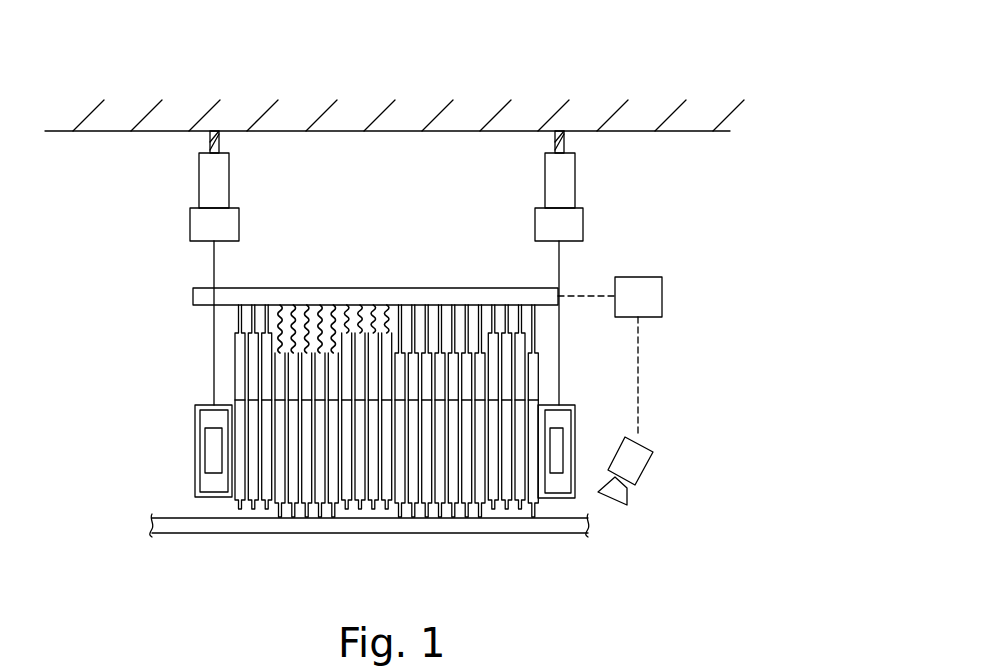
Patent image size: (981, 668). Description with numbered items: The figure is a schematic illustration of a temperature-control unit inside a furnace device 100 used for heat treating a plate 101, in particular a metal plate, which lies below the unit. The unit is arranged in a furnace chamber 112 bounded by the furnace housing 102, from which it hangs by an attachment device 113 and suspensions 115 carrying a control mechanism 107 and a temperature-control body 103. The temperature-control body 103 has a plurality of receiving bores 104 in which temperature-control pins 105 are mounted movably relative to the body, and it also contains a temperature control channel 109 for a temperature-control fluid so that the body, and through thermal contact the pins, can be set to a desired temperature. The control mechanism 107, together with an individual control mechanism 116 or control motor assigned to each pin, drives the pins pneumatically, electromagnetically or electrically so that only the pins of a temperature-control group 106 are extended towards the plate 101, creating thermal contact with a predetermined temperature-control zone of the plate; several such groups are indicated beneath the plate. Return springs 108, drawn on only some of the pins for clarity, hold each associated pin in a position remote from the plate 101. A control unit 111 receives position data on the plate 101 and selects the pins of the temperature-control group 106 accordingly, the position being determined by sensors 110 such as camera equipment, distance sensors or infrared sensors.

The furnace device 100 is at (633, 78).
The plate 101 is at (211, 525).
The furnace housing 102 is at (470, 131).
The temperature-control body 103 is at (557, 404).
The receiving bores 104 is at (233, 395).
The temperature-control pins 105 is at (240, 357).
The temperature-control group 106 is at (335, 535).
The control mechanism 107 is at (207, 297).
The return springs 108 is at (280, 310).
The temperature control channel 109 is at (213, 448).
The sensors 110 is at (633, 462).
The control unit 111 is at (637, 277).
The furnace chamber 112 is at (800, 304).
The attachment device 113 is at (215, 180).
The suspensions 115 is at (212, 258).
The control mechanism 116 is at (537, 312).